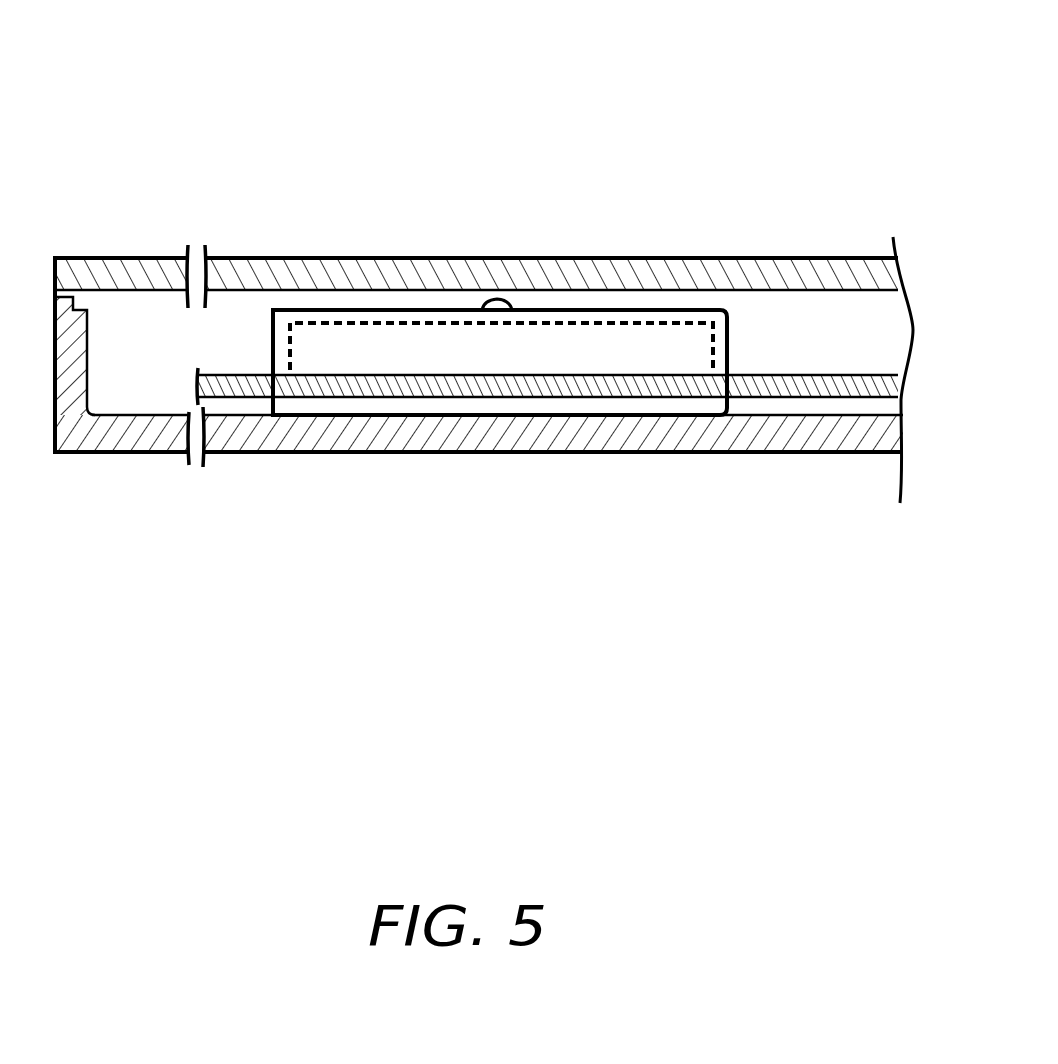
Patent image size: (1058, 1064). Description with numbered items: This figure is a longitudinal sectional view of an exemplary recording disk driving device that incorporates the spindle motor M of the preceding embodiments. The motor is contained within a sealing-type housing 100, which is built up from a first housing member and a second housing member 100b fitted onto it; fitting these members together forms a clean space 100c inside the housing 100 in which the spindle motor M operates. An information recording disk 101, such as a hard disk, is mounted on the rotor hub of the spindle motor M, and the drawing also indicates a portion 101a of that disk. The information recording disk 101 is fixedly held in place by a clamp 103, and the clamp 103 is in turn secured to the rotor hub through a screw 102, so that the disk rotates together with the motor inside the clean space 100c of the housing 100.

The housing 100 is at (484, 258).
The second housing member 100b is at (605, 258).
The clean space 100c is at (202, 355).
The information recording disk 101 is at (765, 385).
The bottom wall surface 101a is at (417, 452).
The screw 102 is at (487, 298).
The clamp 103 is at (557, 214).
The spindle motor M is at (728, 337).